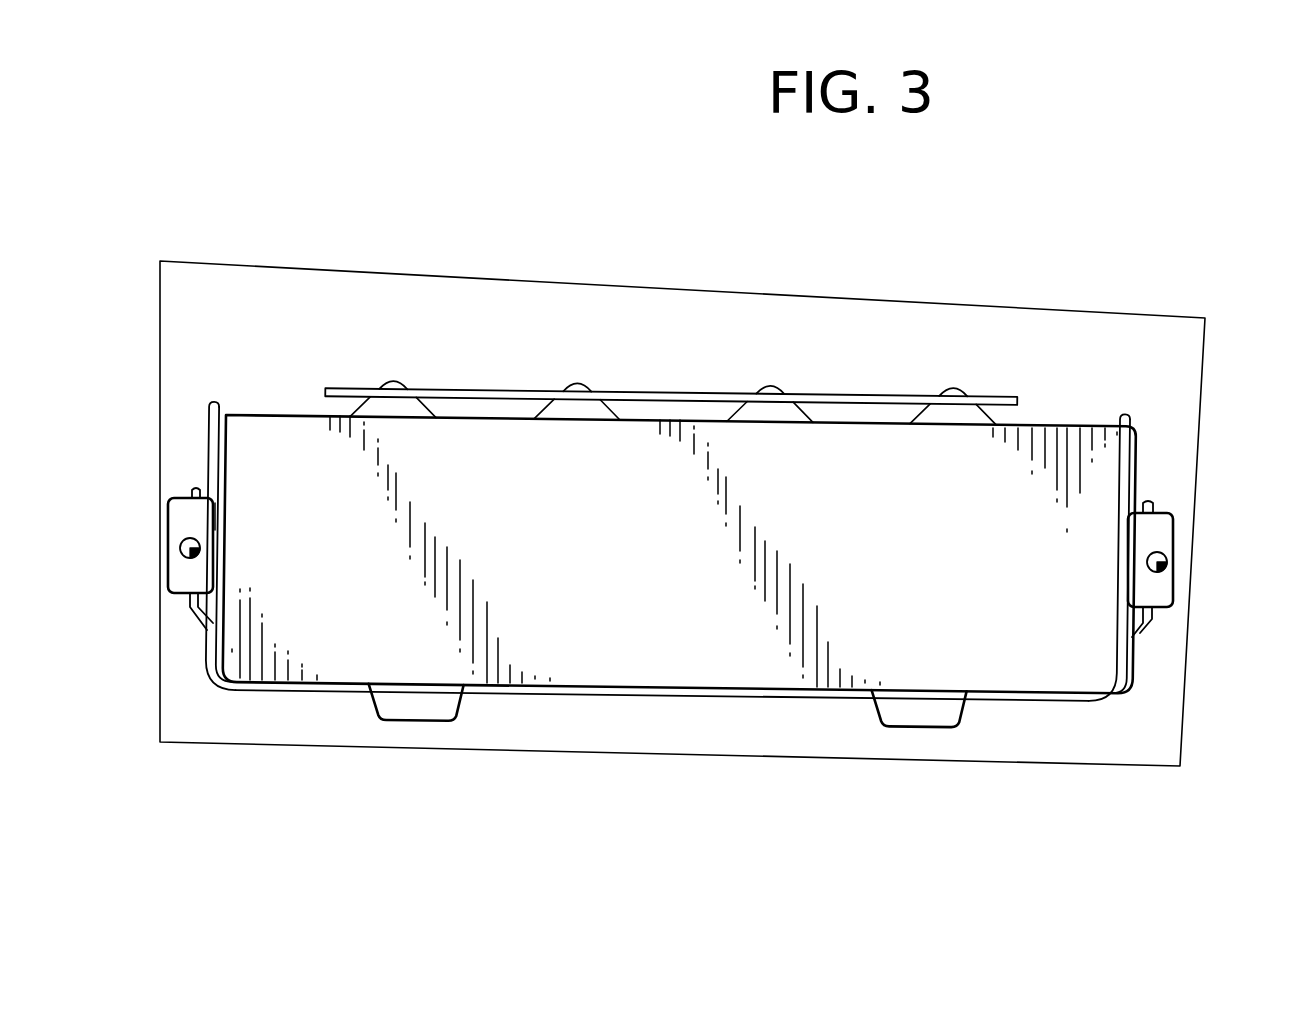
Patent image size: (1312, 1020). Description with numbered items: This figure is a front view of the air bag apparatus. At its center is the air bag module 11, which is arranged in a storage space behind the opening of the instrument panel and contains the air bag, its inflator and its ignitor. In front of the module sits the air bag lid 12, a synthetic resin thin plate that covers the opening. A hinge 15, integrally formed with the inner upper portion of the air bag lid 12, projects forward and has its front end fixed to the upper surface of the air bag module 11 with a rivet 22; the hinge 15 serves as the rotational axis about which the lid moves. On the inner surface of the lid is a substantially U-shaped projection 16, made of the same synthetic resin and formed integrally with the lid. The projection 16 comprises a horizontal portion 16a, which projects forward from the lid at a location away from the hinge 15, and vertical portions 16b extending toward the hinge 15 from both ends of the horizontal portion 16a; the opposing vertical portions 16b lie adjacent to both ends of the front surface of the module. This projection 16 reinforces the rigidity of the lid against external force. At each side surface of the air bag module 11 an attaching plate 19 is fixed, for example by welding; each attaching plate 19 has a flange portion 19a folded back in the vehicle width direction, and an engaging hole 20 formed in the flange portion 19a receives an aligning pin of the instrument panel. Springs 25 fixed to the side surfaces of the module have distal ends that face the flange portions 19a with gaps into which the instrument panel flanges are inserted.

The air bag module 11 is at (1062, 440).
The air bag lid 12 is at (665, 286).
The hinge 15 is at (660, 393).
The projection 16 is at (276, 413).
The horizontal portion 16a is at (740, 700).
The vertical portions 16b is at (228, 576).
The attaching plates 19 is at (168, 556).
The flange portions 19a is at (180, 597).
The engaging holes 20 is at (183, 543).
The rivet 22 is at (393, 380).
The springs 25 is at (195, 488).